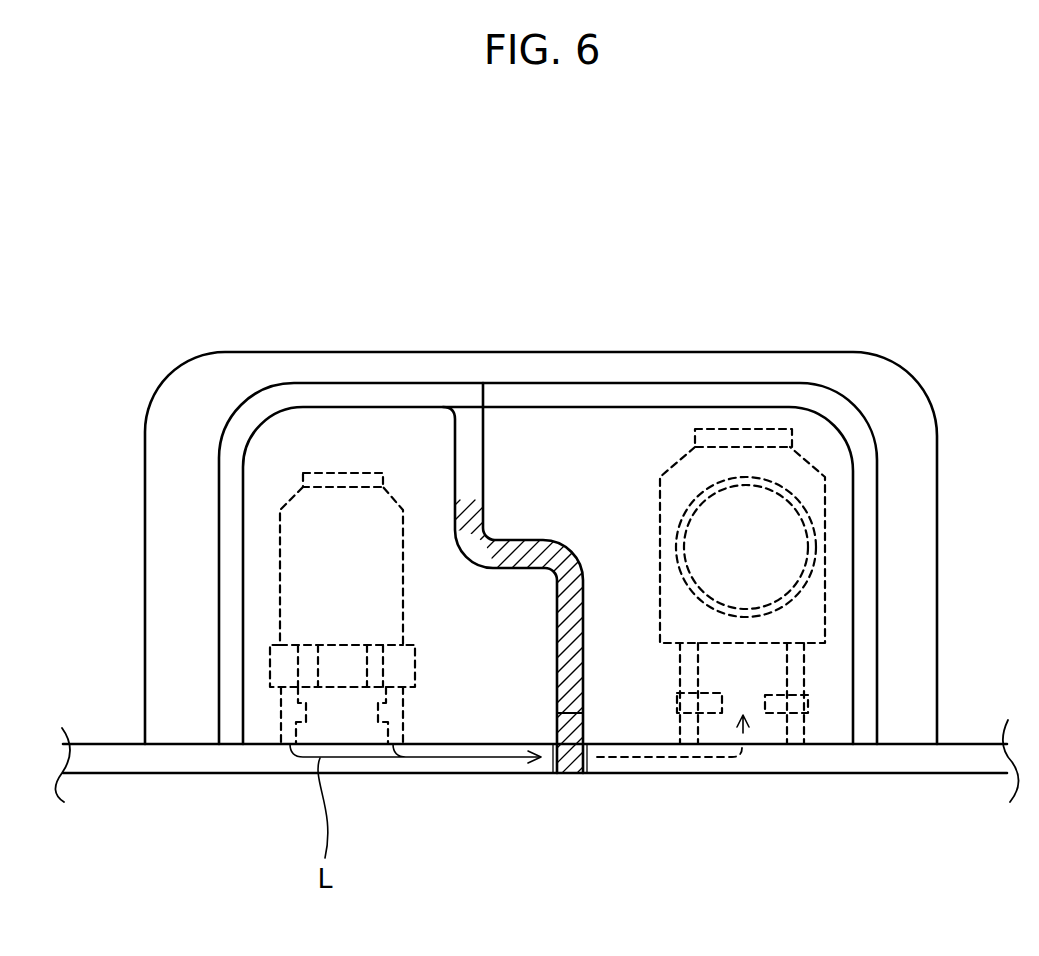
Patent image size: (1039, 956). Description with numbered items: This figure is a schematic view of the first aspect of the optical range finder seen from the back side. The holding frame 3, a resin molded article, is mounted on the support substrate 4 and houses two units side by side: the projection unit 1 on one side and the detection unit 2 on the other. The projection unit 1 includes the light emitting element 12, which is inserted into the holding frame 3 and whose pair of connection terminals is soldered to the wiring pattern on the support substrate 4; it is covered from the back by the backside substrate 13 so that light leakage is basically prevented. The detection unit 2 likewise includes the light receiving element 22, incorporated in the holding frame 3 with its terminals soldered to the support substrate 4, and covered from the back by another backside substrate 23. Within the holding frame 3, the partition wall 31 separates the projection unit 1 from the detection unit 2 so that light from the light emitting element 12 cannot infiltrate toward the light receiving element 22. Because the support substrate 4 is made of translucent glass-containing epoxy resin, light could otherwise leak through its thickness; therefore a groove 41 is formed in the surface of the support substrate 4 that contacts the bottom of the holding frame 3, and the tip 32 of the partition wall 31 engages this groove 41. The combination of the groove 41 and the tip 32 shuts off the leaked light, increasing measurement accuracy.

The projection unit 1 is at (378, 268).
The detection unit 2 is at (766, 320).
The holding frame 3 is at (937, 577).
The support substrate 4 is at (185, 760).
The light emitting element 12 is at (338, 510).
The backside substrate 13 is at (406, 443).
The light receiving element 22 is at (795, 478).
The backside substrate 23 is at (614, 443).
The partition wall 31 is at (567, 608).
The tip 32 is at (560, 775).
The groove 41 is at (588, 775).